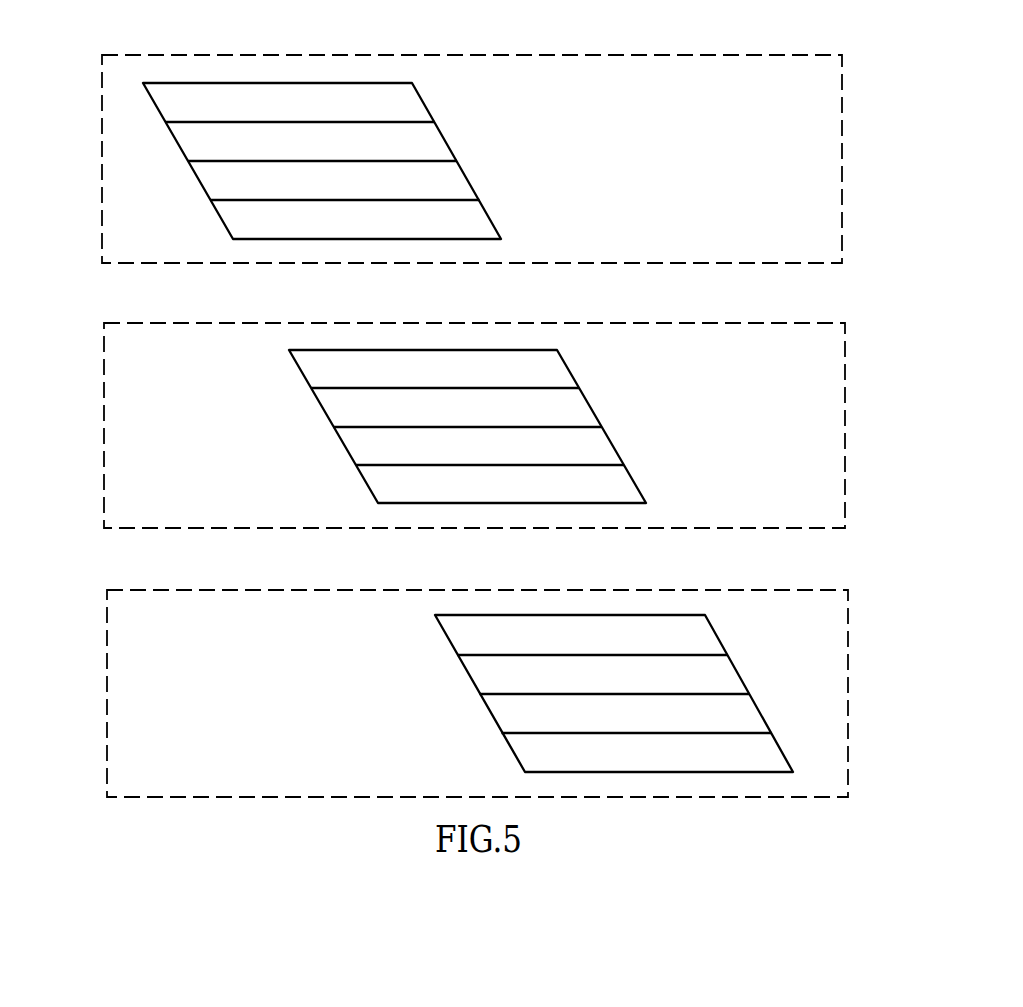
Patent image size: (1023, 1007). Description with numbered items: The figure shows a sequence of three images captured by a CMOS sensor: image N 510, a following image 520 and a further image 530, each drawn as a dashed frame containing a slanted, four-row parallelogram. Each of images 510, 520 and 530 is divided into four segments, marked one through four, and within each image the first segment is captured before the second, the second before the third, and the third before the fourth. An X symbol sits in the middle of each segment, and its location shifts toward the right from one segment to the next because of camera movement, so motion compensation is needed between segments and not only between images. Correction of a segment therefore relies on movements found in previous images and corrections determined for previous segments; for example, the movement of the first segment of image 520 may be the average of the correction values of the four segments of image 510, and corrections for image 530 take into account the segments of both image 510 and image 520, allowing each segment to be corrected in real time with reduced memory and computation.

The image N 510 is at (775, 54).
The image N+1 520 is at (776, 322).
The image N+2 530 is at (779, 589).